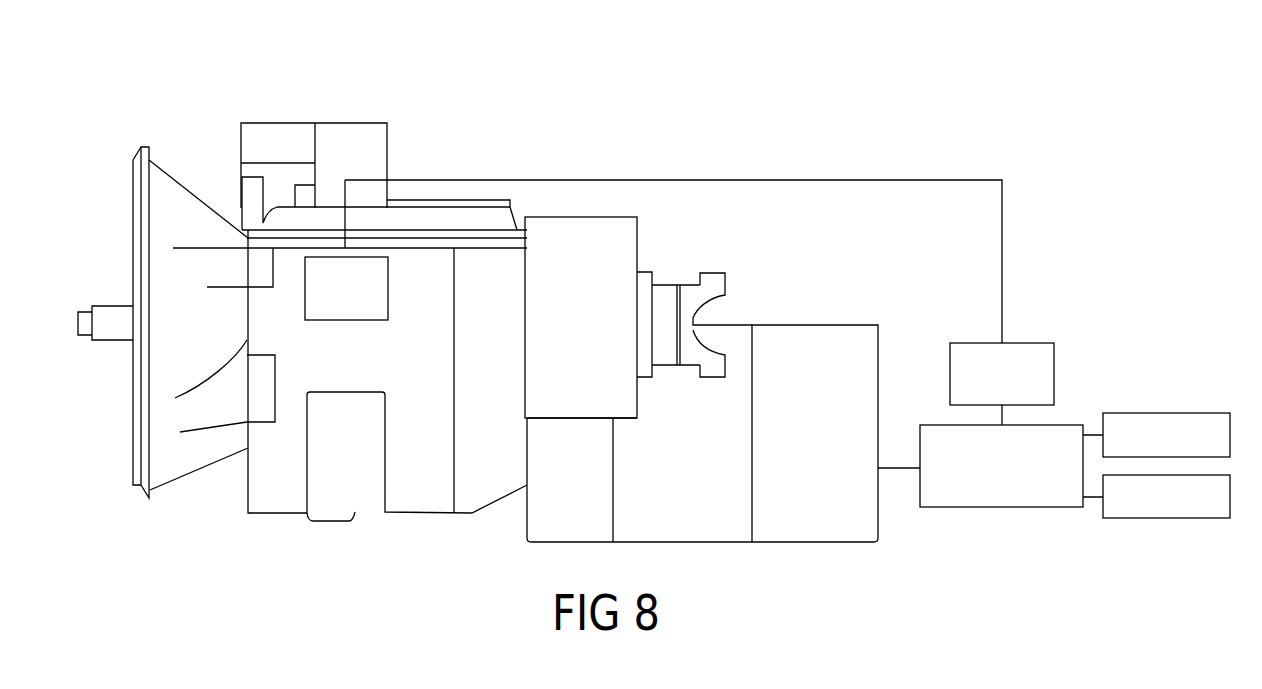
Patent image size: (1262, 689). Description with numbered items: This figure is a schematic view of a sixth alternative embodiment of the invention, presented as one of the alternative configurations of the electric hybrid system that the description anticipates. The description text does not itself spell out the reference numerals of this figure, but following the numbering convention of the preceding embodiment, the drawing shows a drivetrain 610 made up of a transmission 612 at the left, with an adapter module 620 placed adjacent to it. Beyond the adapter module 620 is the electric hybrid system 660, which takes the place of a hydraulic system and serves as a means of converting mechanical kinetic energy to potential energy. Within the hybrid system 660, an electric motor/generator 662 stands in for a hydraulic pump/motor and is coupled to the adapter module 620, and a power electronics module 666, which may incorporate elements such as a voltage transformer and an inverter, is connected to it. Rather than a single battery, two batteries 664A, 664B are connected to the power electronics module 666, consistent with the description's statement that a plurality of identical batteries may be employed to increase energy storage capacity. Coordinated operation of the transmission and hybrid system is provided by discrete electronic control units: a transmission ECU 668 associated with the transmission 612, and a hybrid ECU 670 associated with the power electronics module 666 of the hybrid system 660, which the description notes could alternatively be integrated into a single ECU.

The motor assembly 610 is at (673, 125).
The motor 612 is at (245, 500).
The gearbox 620 is at (602, 342).
The housing 662 is at (743, 545).
The encoder 668 is at (364, 302).
The controller 666 is at (1022, 480).
The sensor 670 is at (1022, 389).
The power source 664A is at (1193, 510).
The power source 664B is at (1193, 450).
The control system 660 is at (1054, 383).